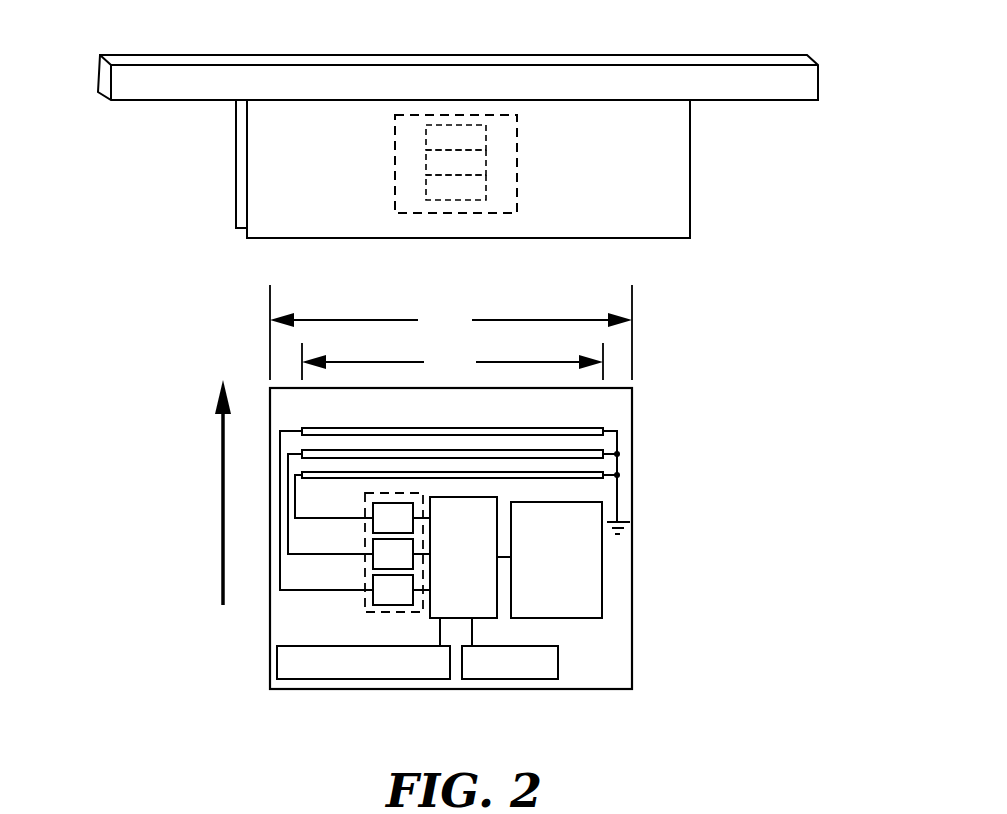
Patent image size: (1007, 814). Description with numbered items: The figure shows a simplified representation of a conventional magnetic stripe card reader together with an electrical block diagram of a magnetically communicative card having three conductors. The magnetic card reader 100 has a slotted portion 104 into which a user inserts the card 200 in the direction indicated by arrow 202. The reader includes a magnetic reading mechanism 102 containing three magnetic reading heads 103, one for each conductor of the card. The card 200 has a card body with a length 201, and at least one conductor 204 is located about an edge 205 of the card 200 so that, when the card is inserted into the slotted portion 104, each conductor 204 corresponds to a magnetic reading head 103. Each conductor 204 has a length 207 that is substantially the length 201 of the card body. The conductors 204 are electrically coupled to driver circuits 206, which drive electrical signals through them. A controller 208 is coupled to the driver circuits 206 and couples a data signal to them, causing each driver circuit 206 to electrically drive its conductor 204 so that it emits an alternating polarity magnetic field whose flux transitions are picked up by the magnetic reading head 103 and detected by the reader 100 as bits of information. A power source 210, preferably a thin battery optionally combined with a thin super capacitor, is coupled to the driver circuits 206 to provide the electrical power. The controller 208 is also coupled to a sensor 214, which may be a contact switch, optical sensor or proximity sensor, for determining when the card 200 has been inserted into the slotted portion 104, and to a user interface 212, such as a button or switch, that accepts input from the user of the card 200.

The magnetic card reader 100 is at (722, 62).
The magnetic reading mechanism 102 is at (395, 157).
The magnetic reading head 103 is at (486, 135).
The slotted portion 104 is at (243, 123).
The magnetically communicative card 200 is at (477, 524).
The length of the card body 201 is at (451, 332).
The arrow indicating insertion direction 202 is at (218, 468).
The conductor 204 is at (583, 428).
The edge of the card 205 is at (615, 387).
The driver circuit 206 is at (390, 613).
The length of the conductor 207 is at (452, 361).
The controller 208 is at (488, 620).
The power source 210 is at (602, 602).
The user interface 212 is at (385, 679).
The sensor 214 is at (507, 679).